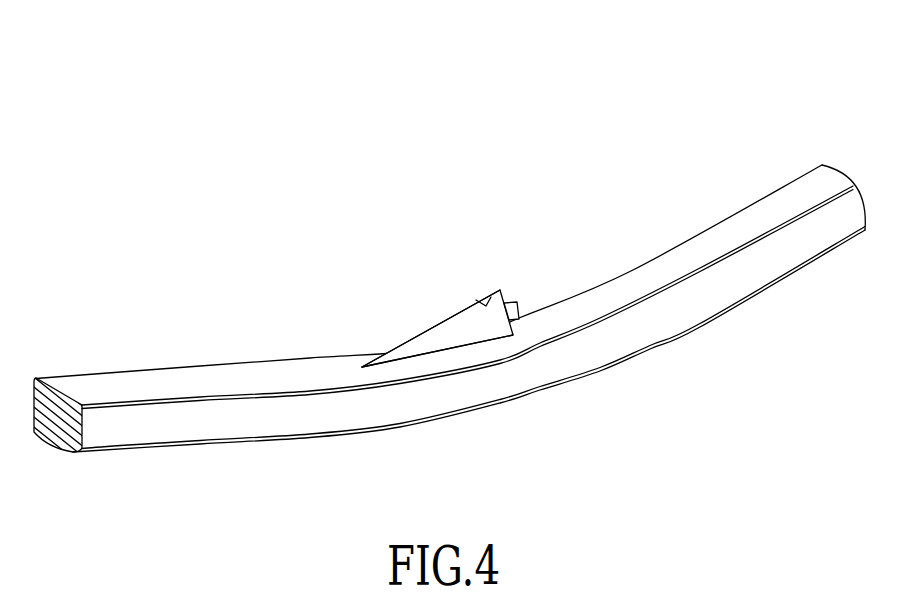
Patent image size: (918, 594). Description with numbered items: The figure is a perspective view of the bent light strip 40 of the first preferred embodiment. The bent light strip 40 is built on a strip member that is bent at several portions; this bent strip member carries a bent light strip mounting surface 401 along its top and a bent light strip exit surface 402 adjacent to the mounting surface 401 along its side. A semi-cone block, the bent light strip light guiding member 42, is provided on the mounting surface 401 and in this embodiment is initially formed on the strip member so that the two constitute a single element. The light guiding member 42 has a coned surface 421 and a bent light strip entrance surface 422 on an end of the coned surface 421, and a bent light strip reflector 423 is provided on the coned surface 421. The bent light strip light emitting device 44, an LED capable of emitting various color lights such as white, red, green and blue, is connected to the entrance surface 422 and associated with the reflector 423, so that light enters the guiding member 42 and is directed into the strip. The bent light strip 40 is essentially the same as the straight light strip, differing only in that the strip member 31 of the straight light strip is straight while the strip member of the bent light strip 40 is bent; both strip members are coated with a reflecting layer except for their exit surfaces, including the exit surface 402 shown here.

The bent light strip 40 is at (848, 167).
The bent light strip mounting surface 401 is at (92, 390).
The bent light strip exit surface 402 is at (123, 423).
The strip member 31 is at (57, 428).
The bent light strip light guiding member 42 is at (397, 337).
The coned surface 421 is at (447, 332).
The bent light strip entrance surface 422 is at (513, 336).
The bent light strip reflector 423 is at (487, 305).
The bent light strip light emitting device 44 is at (517, 303).